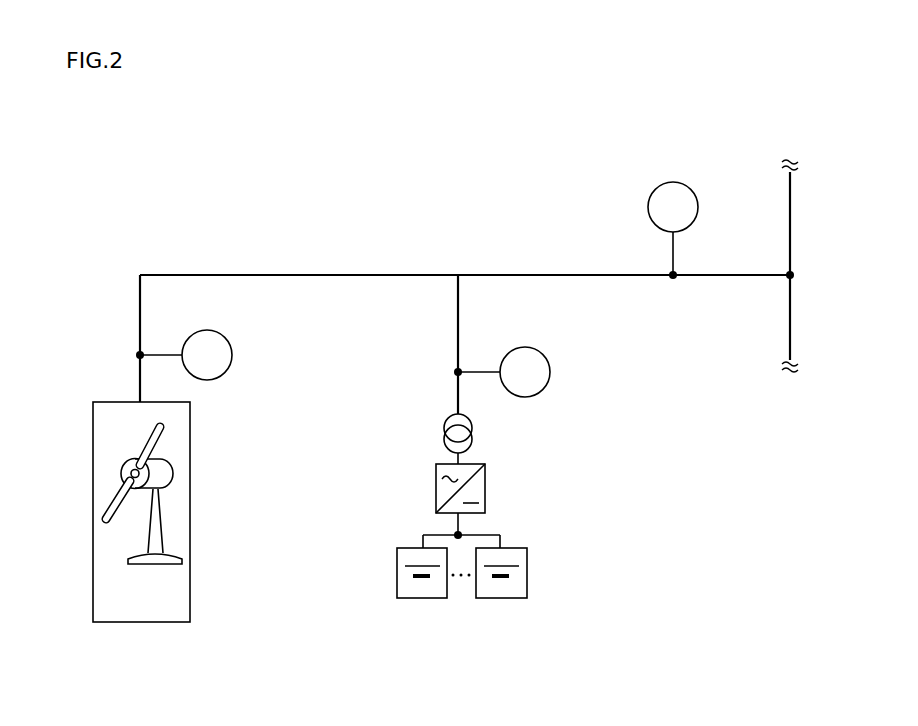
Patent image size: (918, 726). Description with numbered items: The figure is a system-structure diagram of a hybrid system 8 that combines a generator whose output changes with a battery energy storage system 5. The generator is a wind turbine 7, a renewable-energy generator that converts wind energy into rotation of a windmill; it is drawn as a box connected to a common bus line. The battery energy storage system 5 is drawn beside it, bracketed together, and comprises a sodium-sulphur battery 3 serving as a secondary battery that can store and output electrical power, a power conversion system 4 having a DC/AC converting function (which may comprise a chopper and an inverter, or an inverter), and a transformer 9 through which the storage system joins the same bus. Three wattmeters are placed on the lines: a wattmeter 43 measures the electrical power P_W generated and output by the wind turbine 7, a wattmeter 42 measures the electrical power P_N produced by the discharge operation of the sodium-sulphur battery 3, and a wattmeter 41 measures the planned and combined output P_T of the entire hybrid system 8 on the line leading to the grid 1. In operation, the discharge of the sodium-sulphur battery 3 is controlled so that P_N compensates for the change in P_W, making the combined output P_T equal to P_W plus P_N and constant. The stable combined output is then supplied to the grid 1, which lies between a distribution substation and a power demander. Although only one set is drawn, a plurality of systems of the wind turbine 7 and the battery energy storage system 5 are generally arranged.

The grid 1 is at (791, 228).
The sodium-sulphur battery 3 is at (397, 589).
The power conversion system 4 is at (436, 481).
The battery energy storage system 5 is at (347, 417).
The wind turbine 7 is at (182, 615).
The hybrid system 8 is at (487, 199).
The transformer 9 is at (445, 427).
The wattmeter 41 is at (689, 188).
The wattmeter 42 is at (543, 355).
The wattmeter 43 is at (230, 341).